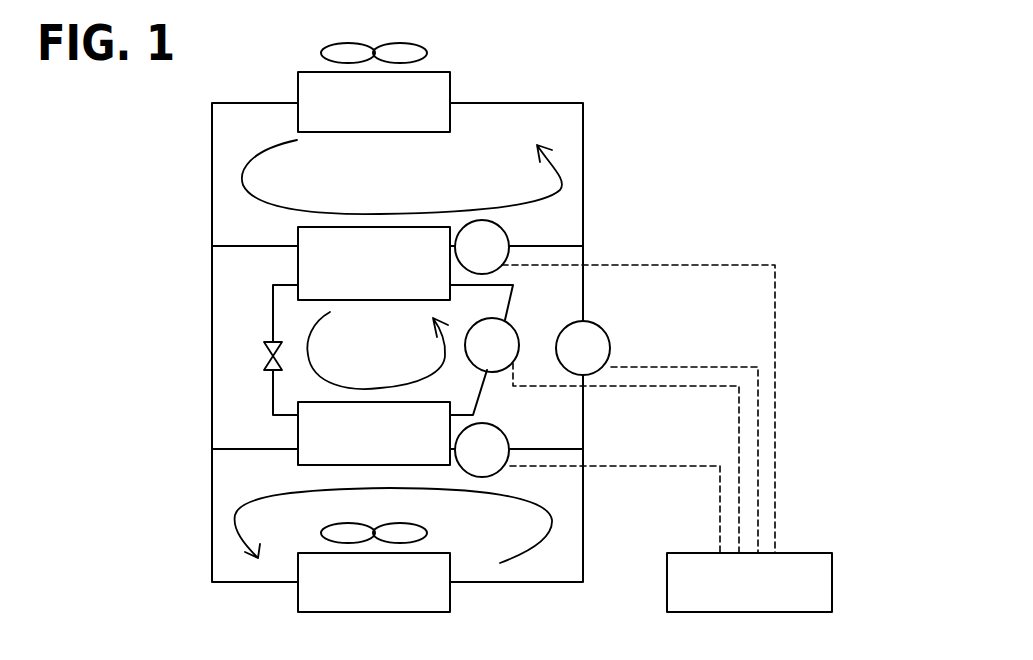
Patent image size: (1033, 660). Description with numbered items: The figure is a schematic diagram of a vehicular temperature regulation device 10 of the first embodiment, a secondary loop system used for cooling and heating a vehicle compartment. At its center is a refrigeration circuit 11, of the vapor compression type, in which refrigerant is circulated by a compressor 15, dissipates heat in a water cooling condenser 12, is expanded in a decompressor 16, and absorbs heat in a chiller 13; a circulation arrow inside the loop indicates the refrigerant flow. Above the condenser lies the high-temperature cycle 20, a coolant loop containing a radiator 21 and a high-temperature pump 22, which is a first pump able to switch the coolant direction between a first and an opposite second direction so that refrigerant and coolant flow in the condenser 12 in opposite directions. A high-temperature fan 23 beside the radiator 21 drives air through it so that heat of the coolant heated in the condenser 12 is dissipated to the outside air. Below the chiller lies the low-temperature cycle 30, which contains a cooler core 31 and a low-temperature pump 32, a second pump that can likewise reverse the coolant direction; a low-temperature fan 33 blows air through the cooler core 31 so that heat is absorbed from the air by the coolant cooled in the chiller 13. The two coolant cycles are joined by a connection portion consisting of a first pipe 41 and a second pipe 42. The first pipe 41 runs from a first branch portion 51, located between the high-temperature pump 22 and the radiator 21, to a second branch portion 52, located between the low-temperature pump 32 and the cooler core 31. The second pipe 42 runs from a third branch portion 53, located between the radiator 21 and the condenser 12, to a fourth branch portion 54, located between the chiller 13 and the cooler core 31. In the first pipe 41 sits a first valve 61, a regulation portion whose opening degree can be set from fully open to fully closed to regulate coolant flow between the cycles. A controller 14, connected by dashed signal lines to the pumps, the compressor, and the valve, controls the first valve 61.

The vehicular temperature regulation device 10 is at (637, 92).
The refrigeration circuit 11 is at (499, 408).
The condenser 12 is at (298, 266).
The chiller 13 is at (298, 428).
The controller 14 is at (798, 553).
The compressor 15 is at (516, 326).
The decompressor 16 is at (265, 348).
The high-temperature cycle 20 is at (600, 179).
The radiator 21 is at (450, 81).
The high-temperature pump 22 is at (503, 229).
The high-temperature fan 23 is at (427, 53).
The low-temperature cycle 30 is at (600, 533).
The cooler core 31 is at (450, 596).
The low-temperature pump 32 is at (500, 470).
The low-temperature fan 33 is at (427, 533).
The first pipe 41 is at (583, 290).
The second pipe 42 is at (212, 315).
The first branch portion 51 is at (583, 246).
The second branch portion 52 is at (583, 449).
The third branch portion 53 is at (212, 246).
The fourth branch portion 54 is at (212, 449).
The first valve 61 is at (611, 347).